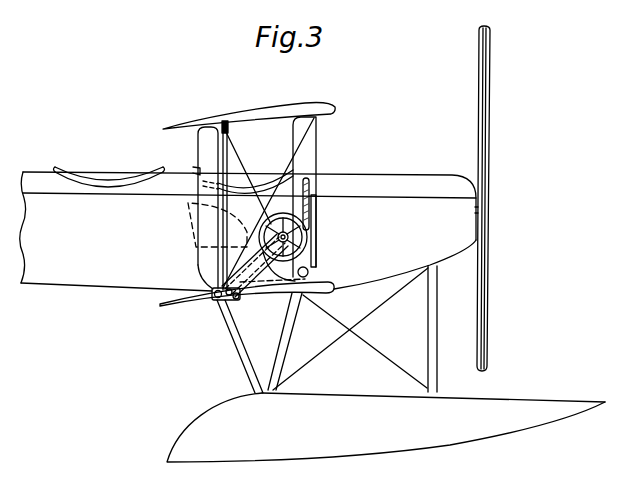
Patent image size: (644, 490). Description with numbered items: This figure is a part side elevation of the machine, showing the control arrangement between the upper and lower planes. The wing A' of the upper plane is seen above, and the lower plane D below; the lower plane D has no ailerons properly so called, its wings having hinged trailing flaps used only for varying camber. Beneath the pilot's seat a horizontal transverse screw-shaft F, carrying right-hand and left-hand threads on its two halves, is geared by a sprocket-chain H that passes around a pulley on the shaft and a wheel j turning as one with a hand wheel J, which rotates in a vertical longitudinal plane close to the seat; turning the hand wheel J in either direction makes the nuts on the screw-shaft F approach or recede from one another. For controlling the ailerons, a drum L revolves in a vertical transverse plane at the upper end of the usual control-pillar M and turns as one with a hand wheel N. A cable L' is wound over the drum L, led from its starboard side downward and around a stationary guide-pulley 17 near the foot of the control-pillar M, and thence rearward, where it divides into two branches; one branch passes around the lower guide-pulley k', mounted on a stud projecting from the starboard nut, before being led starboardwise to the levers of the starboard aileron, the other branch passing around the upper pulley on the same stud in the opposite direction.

The wing of the upper plane A' is at (249, 103).
The hand wheel N is at (307, 179).
The drum L is at (318, 197).
The control-pillar M is at (316, 212).
The cable L' is at (291, 258).
The stationary guide-pulley 17 is at (309, 272).
The hand wheel J is at (283, 227).
The wheel j is at (262, 227).
The guide-pulley k' is at (203, 279).
The screw-shaft F is at (219, 303).
The sprocket-chain H is at (266, 289).
The lower plane D is at (291, 286).